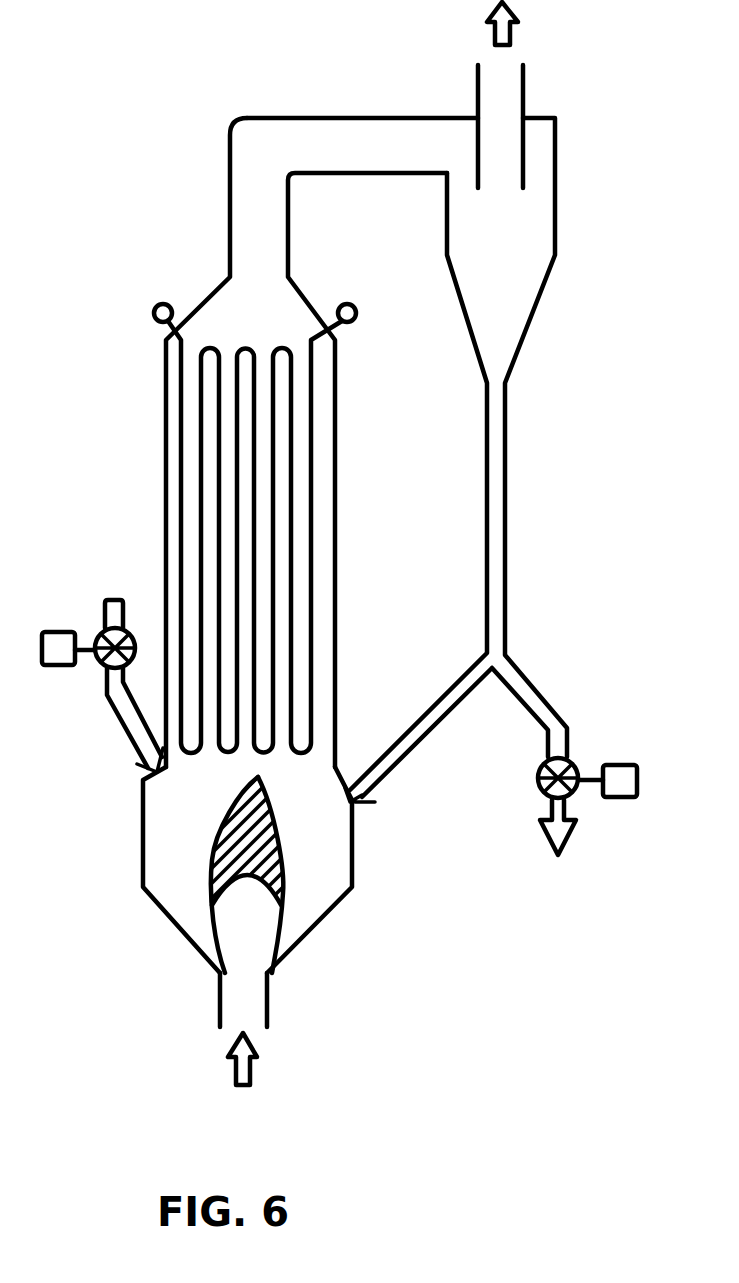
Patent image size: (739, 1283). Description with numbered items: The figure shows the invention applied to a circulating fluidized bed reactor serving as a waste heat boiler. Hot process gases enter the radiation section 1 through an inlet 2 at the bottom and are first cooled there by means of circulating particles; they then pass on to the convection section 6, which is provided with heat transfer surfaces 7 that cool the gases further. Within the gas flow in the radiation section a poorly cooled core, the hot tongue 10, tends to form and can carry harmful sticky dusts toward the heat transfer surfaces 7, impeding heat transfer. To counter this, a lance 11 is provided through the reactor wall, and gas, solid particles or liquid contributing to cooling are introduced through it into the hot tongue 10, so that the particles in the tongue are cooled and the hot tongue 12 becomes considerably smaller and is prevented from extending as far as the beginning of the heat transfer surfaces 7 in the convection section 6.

The radiation section 1 is at (322, 864).
The inlet 2 is at (247, 1000).
The convection section 6 is at (167, 557).
The heat transfer surfaces 7 is at (187, 472).
The hot tongue 10 is at (210, 855).
The lance 11 is at (243, 907).
The hot tongue 12 is at (257, 905).